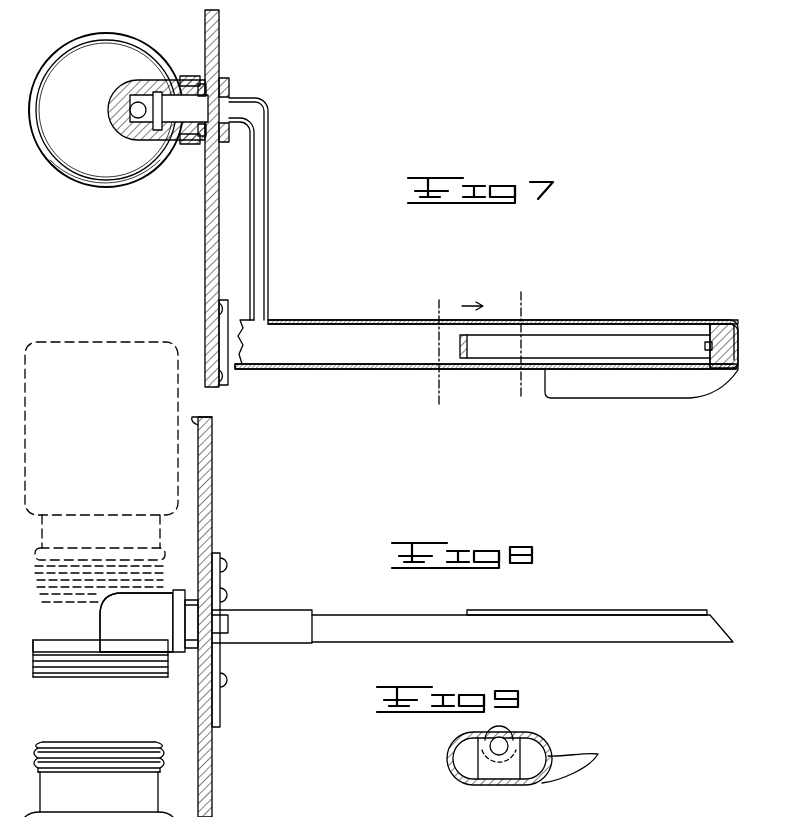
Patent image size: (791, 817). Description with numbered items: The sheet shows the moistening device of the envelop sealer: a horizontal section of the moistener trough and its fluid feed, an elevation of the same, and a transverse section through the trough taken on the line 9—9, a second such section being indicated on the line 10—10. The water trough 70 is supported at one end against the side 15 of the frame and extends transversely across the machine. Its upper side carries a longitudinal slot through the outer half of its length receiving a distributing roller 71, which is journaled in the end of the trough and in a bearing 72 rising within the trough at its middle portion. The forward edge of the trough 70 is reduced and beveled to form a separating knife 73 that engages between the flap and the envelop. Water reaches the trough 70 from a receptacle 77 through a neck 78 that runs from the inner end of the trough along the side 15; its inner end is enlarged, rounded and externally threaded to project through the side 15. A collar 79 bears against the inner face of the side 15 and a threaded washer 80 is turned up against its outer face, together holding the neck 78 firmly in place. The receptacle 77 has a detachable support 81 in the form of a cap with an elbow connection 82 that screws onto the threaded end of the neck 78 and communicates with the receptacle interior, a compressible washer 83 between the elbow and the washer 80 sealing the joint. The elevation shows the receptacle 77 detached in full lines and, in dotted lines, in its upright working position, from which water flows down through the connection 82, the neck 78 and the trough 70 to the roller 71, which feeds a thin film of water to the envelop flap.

In FIG. 7, the section line 9— 9 is at (438, 353).
In FIG. 7, the section line 10— 10 is at (496, 347).
In FIG. 7, the side of the frame 15 is at (220, 56).
In FIG. 8, the side of the frame 15 is at (213, 474).
In FIG. 7, the water trough 70 is at (356, 320).
In FIG. 8, the water trough 70 is at (376, 617).
In FIG. 9, the water trough 70 is at (540, 736).
In FIG. 7, the distributing roller 71 is at (593, 345).
In FIG. 8, the distributing roller 71 is at (572, 612).
In FIG. 9, the distributing roller 71 is at (505, 736).
In FIG. 7, the bearing 72 is at (463, 360).
In FIG. 9, the bearing 72 is at (495, 772).
In FIG. 7, the separating knife 73 is at (632, 396).
In FIG. 9, the separating knife 73 is at (588, 771).
In FIG. 7, the receptacle 77 is at (160, 160).
In FIG. 8, the receptacle 77 is at (101, 579).
In FIG. 7, the neck 78 is at (270, 241).
In FIG. 7, the collar 79 is at (232, 86).
In FIG. 7, the threaded washer 80 is at (203, 82).
In FIG. 8, the threaded washer 80 is at (196, 595).
In FIG. 7, the detachable support 81 is at (106, 110).
In FIG. 8, the detachable support 81 is at (115, 673).
In FIG. 7, the elbow connection 82 is at (128, 137).
In FIG. 8, the elbow connection 82 is at (136, 622).
In FIG. 7, the compressible washer 83 is at (183, 77).
In FIG. 8, the compressible washer 83 is at (181, 655).